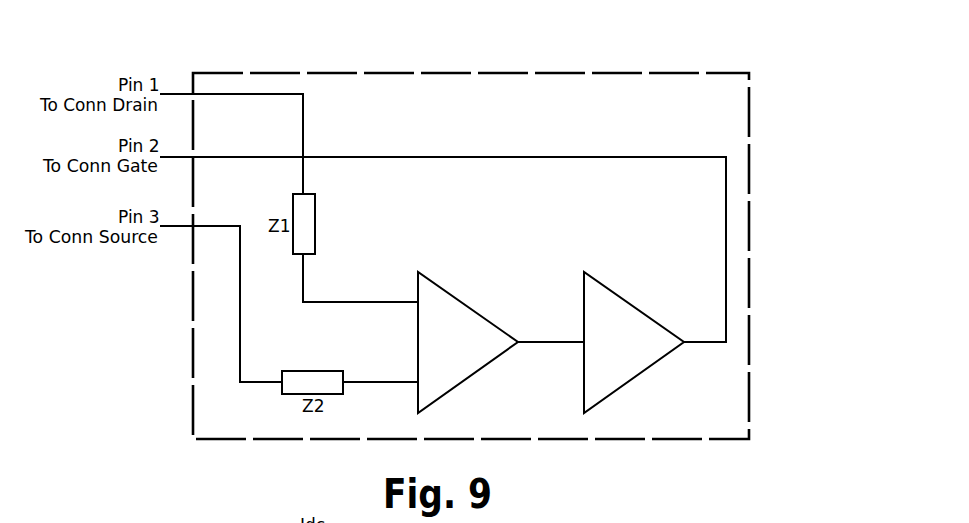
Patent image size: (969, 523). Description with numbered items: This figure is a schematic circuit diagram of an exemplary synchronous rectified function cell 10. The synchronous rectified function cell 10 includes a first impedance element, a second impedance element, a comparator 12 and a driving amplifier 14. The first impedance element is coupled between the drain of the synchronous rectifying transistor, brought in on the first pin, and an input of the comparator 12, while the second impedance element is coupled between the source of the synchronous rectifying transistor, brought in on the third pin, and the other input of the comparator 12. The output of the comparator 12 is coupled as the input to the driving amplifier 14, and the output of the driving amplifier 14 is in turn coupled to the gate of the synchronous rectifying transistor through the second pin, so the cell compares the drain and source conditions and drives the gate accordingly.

The synchronous rectified function cell 10 is at (610, 73).
The comparator 12 is at (494, 323).
The driving amplifier 14 is at (661, 323).